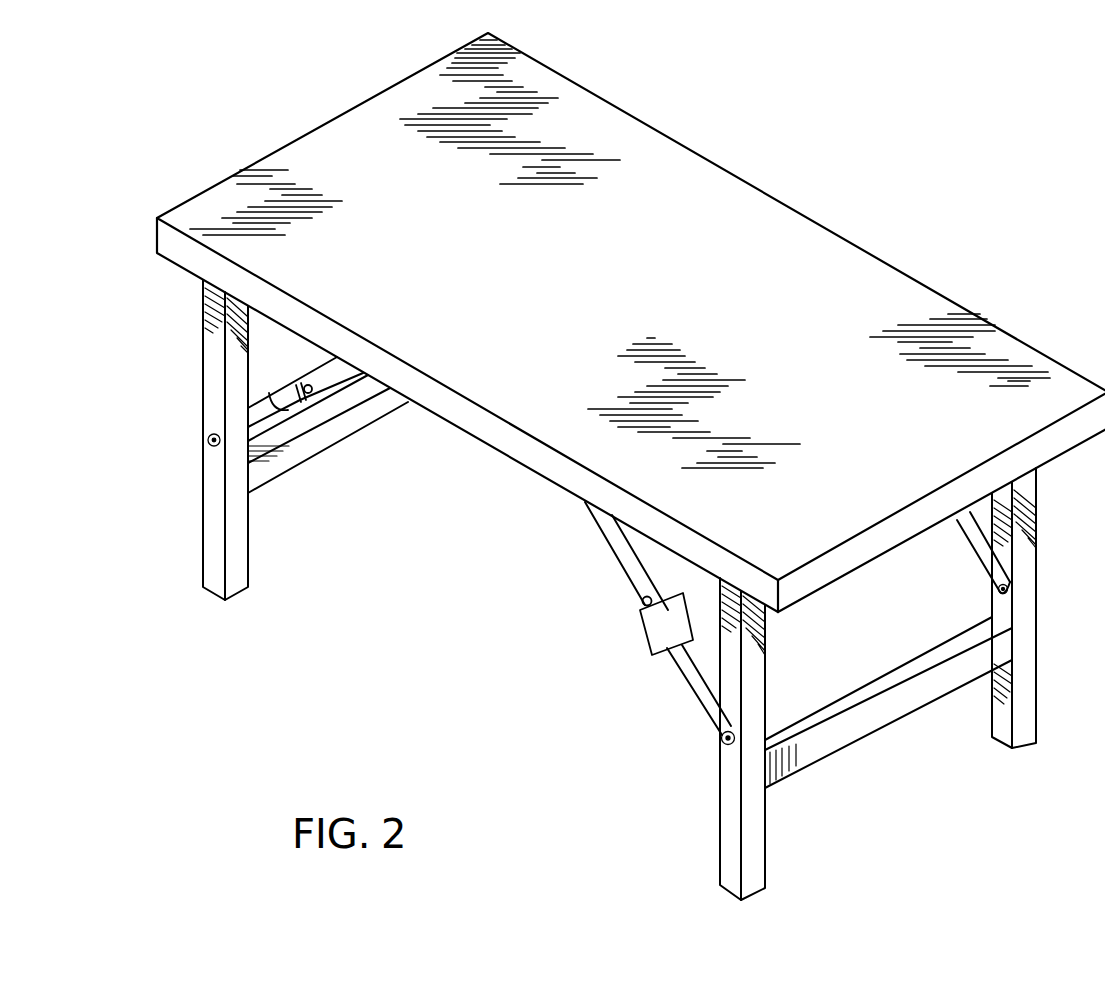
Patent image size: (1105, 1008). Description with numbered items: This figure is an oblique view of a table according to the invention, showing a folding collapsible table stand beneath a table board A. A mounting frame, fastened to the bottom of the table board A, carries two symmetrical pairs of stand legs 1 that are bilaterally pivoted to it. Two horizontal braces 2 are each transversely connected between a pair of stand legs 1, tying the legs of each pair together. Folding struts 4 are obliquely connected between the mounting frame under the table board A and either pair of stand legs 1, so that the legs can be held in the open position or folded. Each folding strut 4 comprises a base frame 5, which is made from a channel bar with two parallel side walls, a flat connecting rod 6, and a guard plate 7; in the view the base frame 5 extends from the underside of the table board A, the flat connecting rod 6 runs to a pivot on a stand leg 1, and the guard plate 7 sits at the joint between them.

The table board A is at (817, 226).
The stand legs 1 is at (206, 531).
The horizontal braces 2 is at (281, 468).
The folding struts 4 is at (308, 408).
The base frame 5 is at (339, 372).
The flat connecting rod 6 is at (258, 416).
The guard plate 7 is at (283, 392).